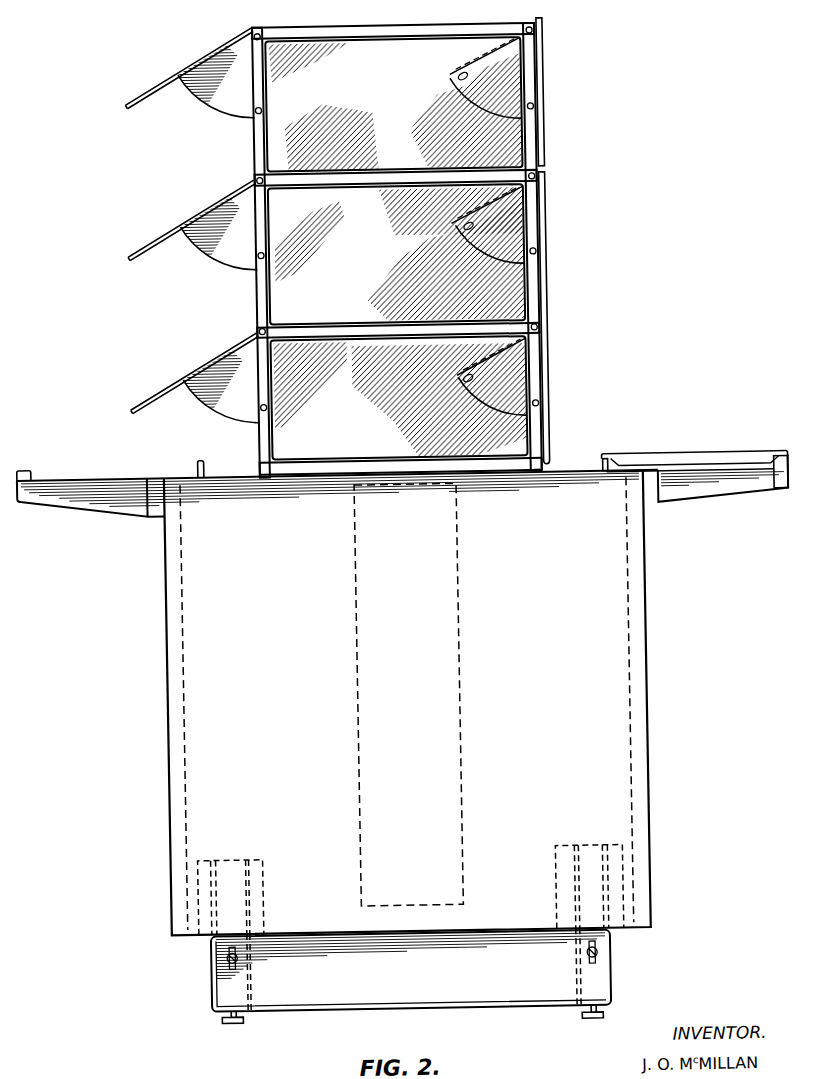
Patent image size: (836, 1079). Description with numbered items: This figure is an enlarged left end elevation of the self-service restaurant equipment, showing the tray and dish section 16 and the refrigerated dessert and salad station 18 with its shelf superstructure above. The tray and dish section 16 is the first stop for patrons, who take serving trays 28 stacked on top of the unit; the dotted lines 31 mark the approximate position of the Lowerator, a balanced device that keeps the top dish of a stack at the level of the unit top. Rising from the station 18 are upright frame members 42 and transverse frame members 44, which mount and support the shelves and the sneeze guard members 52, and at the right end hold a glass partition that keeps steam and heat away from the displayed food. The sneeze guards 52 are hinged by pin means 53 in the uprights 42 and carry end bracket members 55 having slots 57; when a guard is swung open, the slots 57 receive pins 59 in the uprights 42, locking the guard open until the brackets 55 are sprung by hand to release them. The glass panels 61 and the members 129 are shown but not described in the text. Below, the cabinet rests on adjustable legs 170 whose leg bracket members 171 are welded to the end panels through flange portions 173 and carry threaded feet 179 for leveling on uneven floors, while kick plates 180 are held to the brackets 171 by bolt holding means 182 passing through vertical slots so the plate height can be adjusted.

The tray and dish section 16 is at (652, 602).
The refrigerated dessert and salad station 18 is at (349, 240).
The serving trays 28 is at (691, 457).
The dotted lines (Lowerator position) 31 is at (456, 597).
The upright frame members 42 is at (544, 118).
The transverse frame members 44 is at (409, 30).
The sneeze guard members 52 is at (552, 52).
The pin means 53 is at (267, 29).
The end bracket members 55 is at (226, 111).
The slots 57 is at (466, 77).
The pins 59 is at (541, 254).
The glass panel 61 is at (375, 99).
The post 129 is at (26, 464).
The legs 170 is at (246, 972).
The leg bracket members 171 is at (243, 1009).
The flange portions 173 is at (258, 882).
The foot 179 is at (225, 1020).
The kick plates 180 is at (412, 1004).
The bolt holding means 182 is at (218, 956).